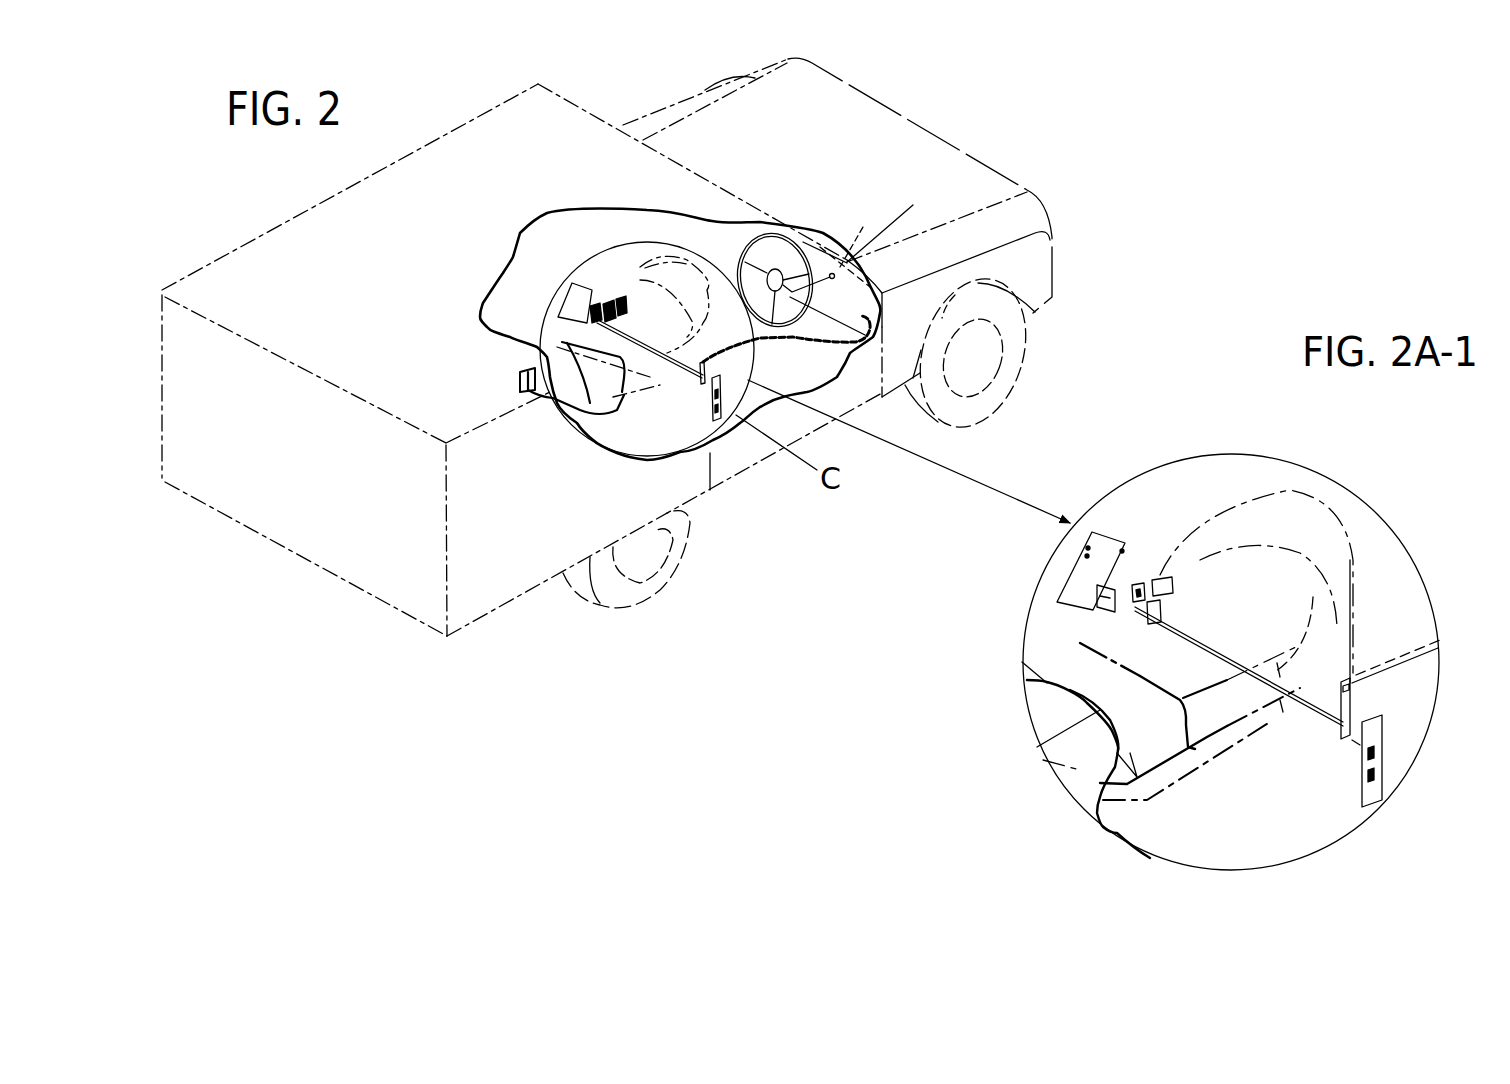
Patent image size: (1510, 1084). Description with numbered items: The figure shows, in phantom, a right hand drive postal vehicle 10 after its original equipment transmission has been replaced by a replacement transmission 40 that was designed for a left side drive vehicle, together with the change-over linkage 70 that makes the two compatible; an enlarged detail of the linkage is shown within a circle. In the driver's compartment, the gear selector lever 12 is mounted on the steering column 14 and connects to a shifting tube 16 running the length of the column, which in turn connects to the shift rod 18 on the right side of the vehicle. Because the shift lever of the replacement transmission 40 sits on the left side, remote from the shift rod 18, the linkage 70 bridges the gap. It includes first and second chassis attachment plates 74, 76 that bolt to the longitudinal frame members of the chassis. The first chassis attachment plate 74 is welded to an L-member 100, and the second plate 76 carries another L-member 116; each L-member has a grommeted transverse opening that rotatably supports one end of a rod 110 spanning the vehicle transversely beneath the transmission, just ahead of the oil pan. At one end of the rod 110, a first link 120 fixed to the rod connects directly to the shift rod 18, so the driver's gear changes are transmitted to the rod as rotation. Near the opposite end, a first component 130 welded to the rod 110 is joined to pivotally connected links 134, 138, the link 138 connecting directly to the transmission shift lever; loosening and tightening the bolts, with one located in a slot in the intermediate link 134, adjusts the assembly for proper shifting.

In FIG. 2, the postal vehicle 10 is at (426, 128).
In FIG. 2, the gear selector lever 12 is at (813, 273).
In FIG. 2, the steering column 14 is at (892, 218).
In FIG. 2, the shifting tube 16 is at (863, 230).
In FIG. 2, the shift rod 18 is at (797, 340).
In FIG. 2A-1, the shift rod 18 is at (1415, 650).
In FIG. 2, the replacement transmission 40 is at (643, 310).
In FIG. 2A-1, the replacement transmission 40 is at (1208, 573).
In FIG. 2, the change-over linkage 70 is at (627, 410).
In FIG. 2A-1, the change-over linkage 70 is at (1208, 638).
In FIG. 2, the first chassis attachment plate 74 is at (716, 398).
In FIG. 2A-1, the first chassis attachment plate 74 is at (1378, 763).
In FIG. 2, the second chassis attachment plate 76 is at (575, 303).
In FIG. 2A-1, the second chassis attachment plate 76 is at (1090, 568).
In FIG. 2A-1, the L-member 100 is at (1360, 745).
In FIG. 2A-1, the rod 110 is at (1217, 647).
In FIG. 2A-1, the L-member 116 is at (1108, 600).
In FIG. 2A-1, the first link 120 is at (1353, 708).
In FIG. 2A-1, the first component 130 is at (1163, 602).
In FIG. 2A-1, the intermediate link 134 is at (1152, 582).
In FIG. 2A-1, the link 138 is at (1137, 587).